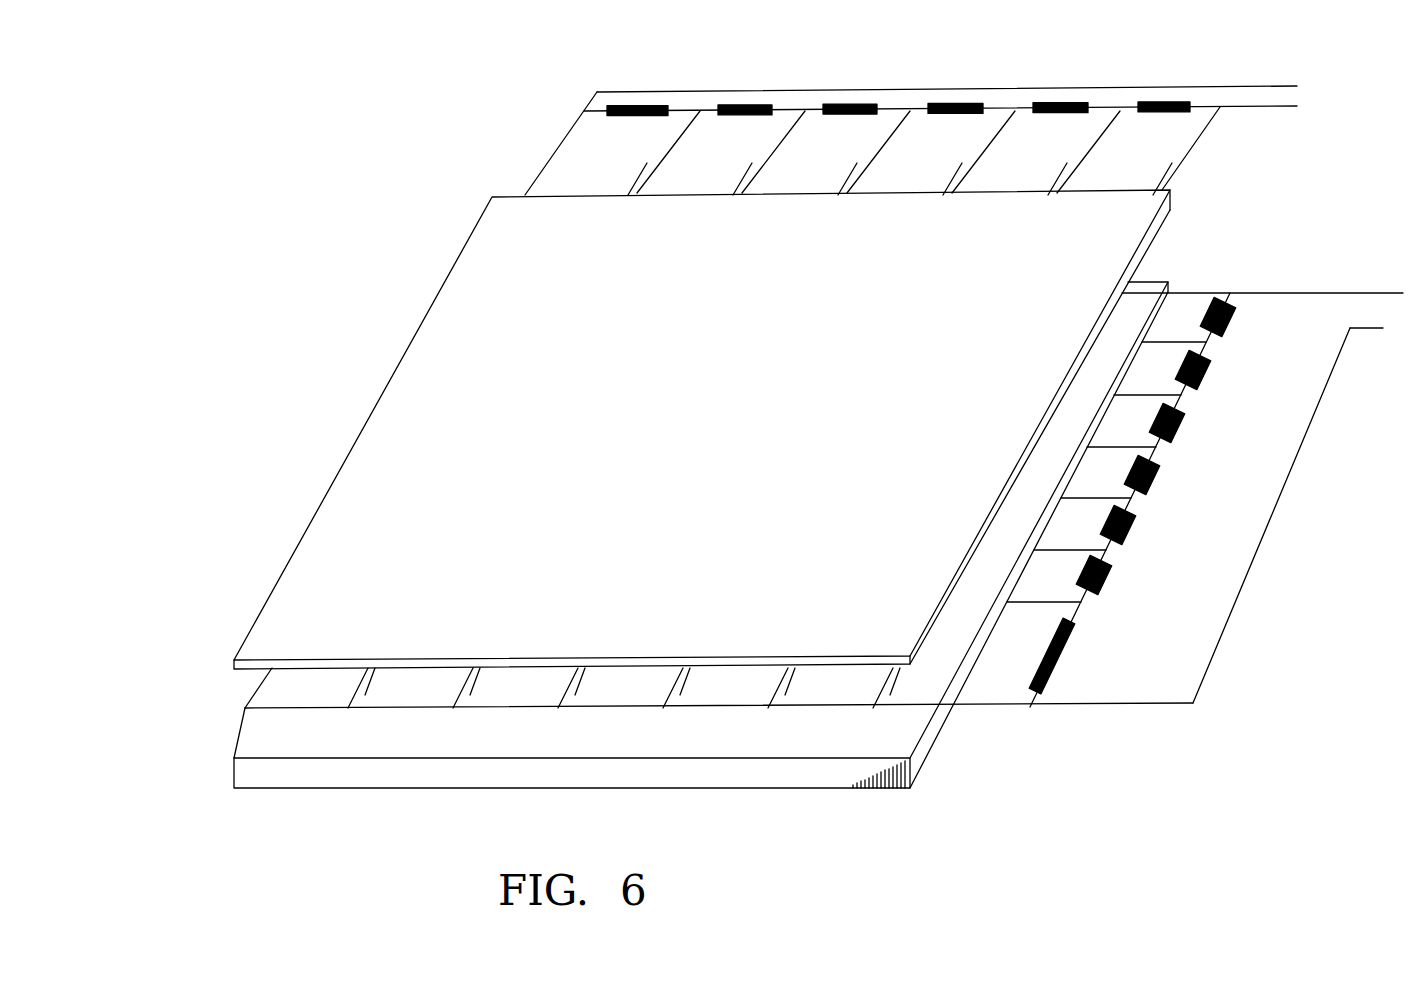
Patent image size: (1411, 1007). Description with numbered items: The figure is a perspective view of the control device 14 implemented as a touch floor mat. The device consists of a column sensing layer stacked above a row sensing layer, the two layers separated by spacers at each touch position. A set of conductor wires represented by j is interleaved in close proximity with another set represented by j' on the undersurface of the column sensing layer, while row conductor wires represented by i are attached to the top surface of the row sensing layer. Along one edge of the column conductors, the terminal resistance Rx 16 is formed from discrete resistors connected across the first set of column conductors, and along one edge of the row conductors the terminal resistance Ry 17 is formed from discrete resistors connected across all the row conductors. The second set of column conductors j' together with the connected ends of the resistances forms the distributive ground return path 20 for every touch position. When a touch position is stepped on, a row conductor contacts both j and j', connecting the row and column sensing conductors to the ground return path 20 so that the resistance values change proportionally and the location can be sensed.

The control device 14 is at (398, 320).
The terminal resistance Rx 16 is at (590, 110).
The terminal resistance Ry 17 is at (1243, 302).
The ground return path 20 is at (417, 708).